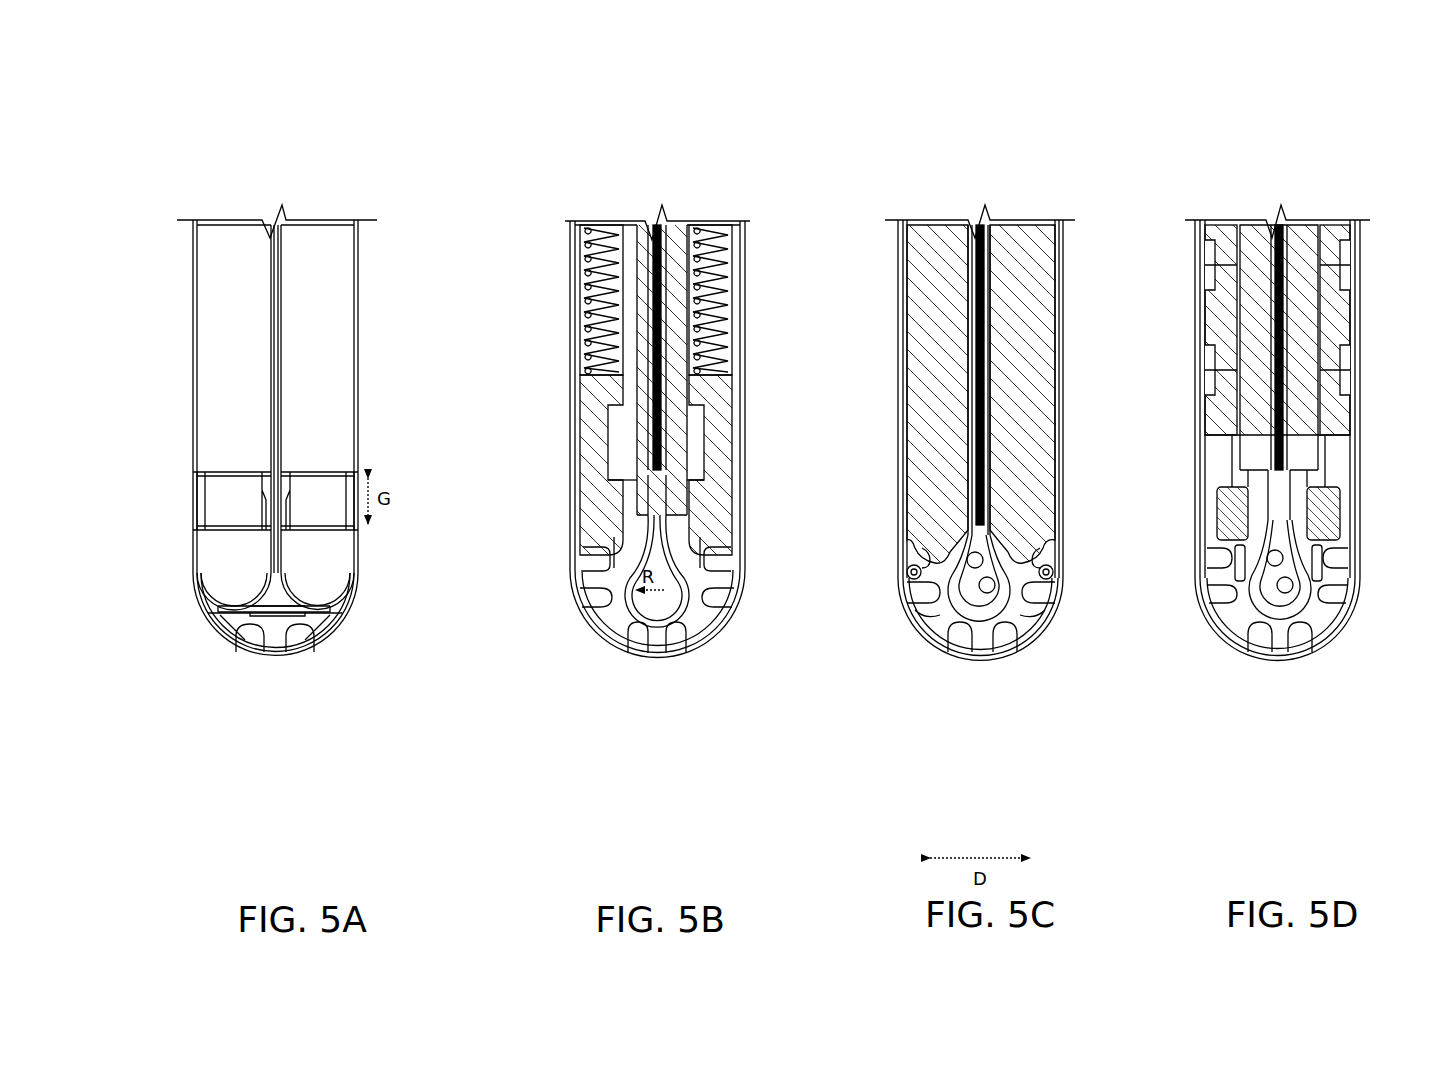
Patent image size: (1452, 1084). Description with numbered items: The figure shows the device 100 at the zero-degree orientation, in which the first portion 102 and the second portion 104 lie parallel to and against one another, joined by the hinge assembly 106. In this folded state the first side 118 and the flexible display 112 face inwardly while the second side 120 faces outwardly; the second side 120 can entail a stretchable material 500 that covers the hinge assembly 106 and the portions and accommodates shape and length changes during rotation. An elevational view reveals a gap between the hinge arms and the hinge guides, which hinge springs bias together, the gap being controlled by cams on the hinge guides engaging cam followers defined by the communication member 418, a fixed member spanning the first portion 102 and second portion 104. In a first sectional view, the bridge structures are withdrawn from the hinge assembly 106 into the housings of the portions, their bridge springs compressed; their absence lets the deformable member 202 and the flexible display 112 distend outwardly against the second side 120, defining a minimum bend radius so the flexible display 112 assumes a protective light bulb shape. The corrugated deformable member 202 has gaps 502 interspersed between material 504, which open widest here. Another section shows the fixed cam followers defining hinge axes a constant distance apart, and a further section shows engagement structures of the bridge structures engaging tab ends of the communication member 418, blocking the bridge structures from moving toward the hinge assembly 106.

In FIG. 5A, the device 100 is at (322, 150).
In FIG. 5A, the first portion 102 is at (185, 215).
In FIG. 5A, the second portion 104 is at (342, 214).
In FIG. 5A, the hinge assembly 106 is at (270, 684).
In FIG. 5B, the hinge assembly 106 is at (658, 670).
In FIG. 5C, the hinge assembly 106 is at (980, 670).
In FIG. 5D, the hinge assembly 106 is at (1270, 670).
In FIG. 5B, the flexible display 112 is at (627, 608).
In FIG. 5C, the flexible display 112 is at (955, 606).
In FIG. 5D, the flexible display 112 is at (1284, 621).
In FIG. 5A, the first side 118 is at (272, 215).
In FIG. 5B, the first side 118 is at (657, 216).
In FIG. 5C, the first side 118 is at (980, 215).
In FIG. 5D, the first side 118 is at (1277, 217).
In FIG. 5A, the second side 120 is at (220, 644).
In FIG. 5B, the second side 120 is at (576, 594).
In FIG. 5C, the second side 120 is at (906, 620).
In FIG. 5D, the second side 120 is at (1256, 650).
In FIG. 5A, the deformable member 202 is at (322, 625).
In FIG. 5B, the deformable member 202 is at (663, 660).
In FIG. 5C, the deformable member 202 is at (985, 641).
In FIG. 5D, the deformable member 202 is at (1290, 641).
In FIG. 5A, the communication member 418 is at (279, 617).
In FIG. 5A, the stretchable material 500 is at (199, 612).
In FIG. 5B, the stretchable material 500 is at (600, 590).
In FIG. 5C, the stretchable material 500 is at (1025, 636).
In FIG. 5D, the stretchable material 500 is at (1212, 618).
In FIG. 5B, the gaps 502 is at (712, 607).
In FIG. 5B, the material 504 is at (690, 616).